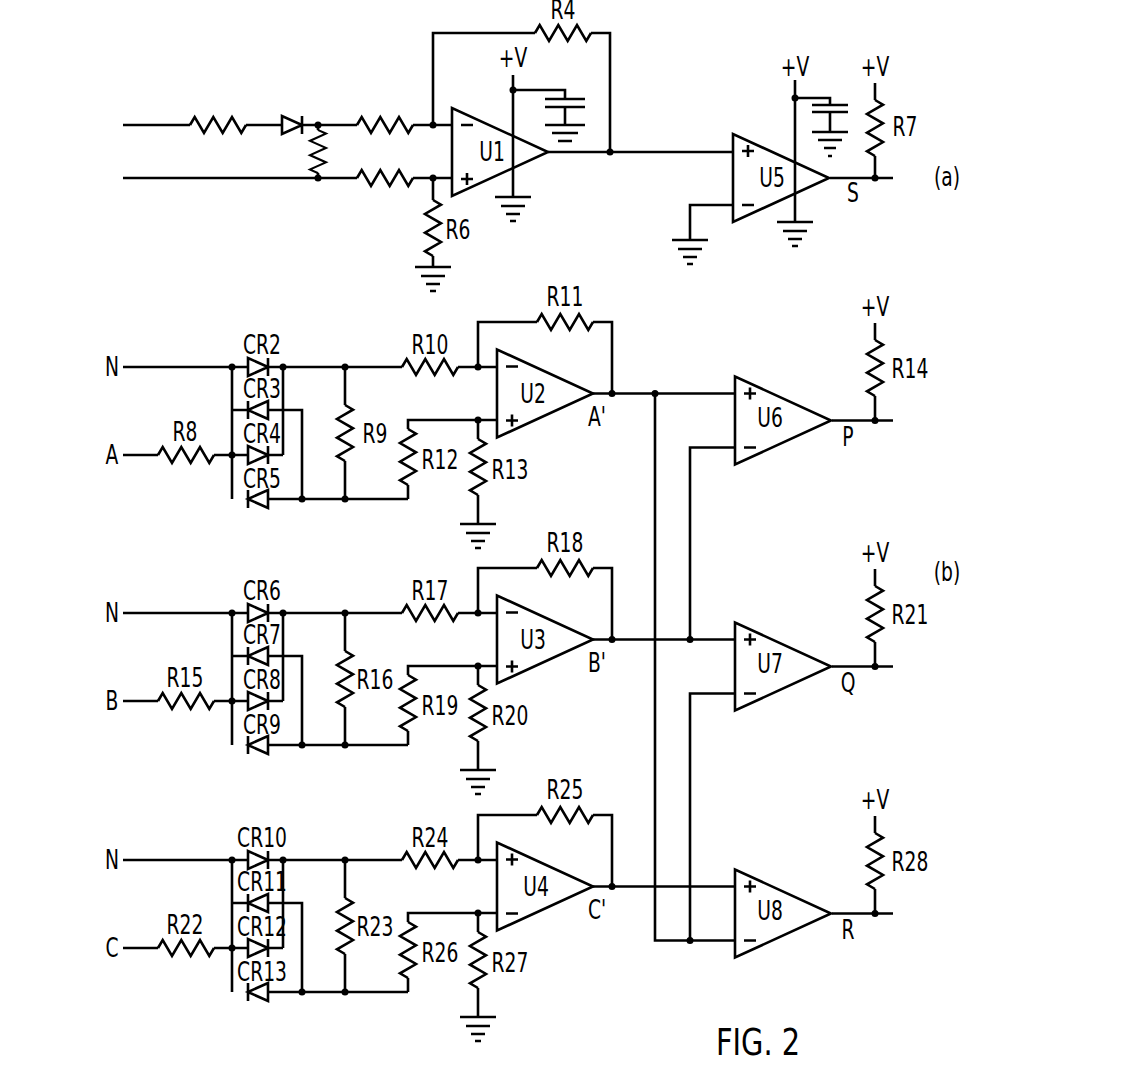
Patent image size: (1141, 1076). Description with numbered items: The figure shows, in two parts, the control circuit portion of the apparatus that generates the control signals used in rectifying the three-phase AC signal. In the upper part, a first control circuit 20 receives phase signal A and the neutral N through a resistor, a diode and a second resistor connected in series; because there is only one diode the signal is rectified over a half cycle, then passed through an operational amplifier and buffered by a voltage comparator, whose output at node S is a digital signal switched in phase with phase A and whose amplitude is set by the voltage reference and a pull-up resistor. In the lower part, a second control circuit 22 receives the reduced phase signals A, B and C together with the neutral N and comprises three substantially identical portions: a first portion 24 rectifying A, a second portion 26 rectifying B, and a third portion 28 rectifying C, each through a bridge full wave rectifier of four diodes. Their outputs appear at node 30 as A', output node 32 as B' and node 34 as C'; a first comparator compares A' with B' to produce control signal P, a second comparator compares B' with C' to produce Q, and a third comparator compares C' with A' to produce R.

The first control circuit 20 is at (246, 254).
The second control circuit 22 is at (332, 554).
The first portion 24 is at (147, 554).
The second portion 26 is at (145, 784).
The third portion 28 is at (147, 1019).
The node 30 is at (628, 385).
The output node 32 is at (628, 631).
The node 34 is at (628, 878).